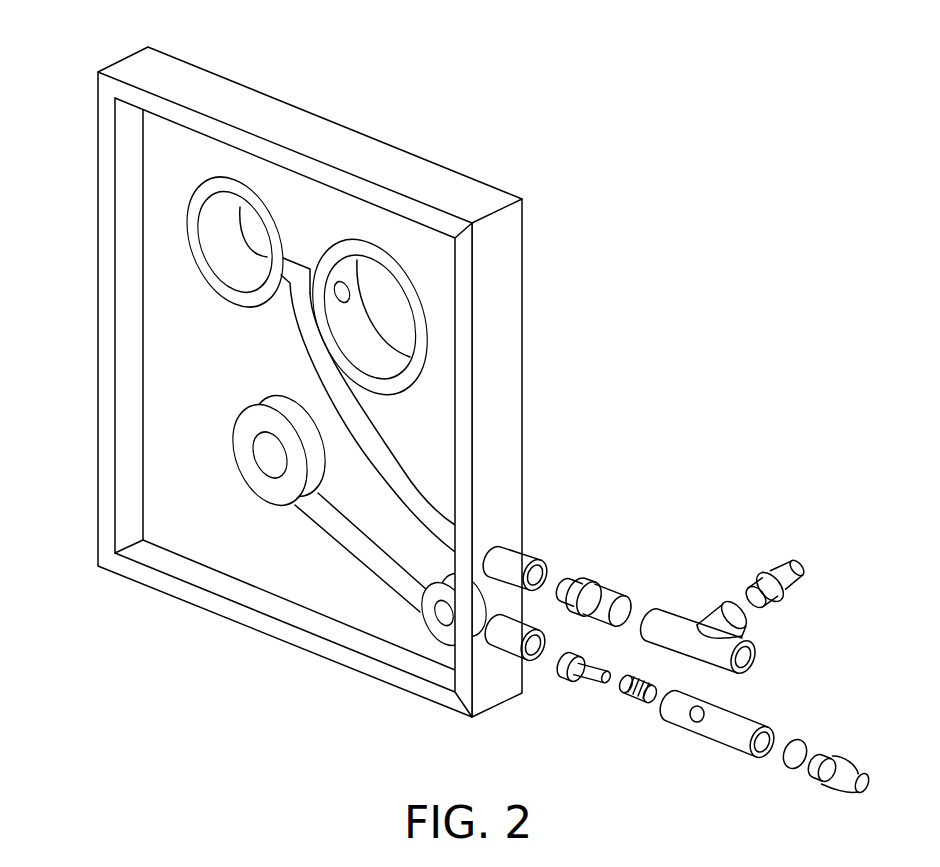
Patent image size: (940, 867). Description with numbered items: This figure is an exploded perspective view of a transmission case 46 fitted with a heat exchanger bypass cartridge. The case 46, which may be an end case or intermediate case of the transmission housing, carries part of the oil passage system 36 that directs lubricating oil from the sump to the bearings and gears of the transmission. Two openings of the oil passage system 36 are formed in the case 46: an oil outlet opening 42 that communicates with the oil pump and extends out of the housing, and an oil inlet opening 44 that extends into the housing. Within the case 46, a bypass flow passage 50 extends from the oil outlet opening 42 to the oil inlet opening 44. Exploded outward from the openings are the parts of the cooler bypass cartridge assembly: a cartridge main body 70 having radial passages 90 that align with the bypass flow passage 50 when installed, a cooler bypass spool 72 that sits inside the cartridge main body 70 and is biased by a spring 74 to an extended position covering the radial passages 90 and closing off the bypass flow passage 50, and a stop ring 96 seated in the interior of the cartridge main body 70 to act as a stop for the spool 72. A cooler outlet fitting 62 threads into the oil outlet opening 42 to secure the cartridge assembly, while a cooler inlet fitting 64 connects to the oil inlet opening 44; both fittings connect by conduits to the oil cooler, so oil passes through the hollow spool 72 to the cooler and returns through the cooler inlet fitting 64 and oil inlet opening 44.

The case 46 is at (329, 374).
The oil passage system 36 is at (431, 513).
The bypass flow passage 50 is at (437, 590).
The oil inlet opening 44 is at (520, 560).
The oil outlet opening 42 is at (510, 650).
The cooler inlet fitting 64 is at (595, 580).
The cooler bypass spool 72 is at (592, 682).
The spring 74 is at (640, 703).
The cartridge main body 70 is at (718, 731).
The radial passages 90 is at (705, 713).
The stop ring 96 is at (787, 767).
The cooler outlet fitting 62 is at (852, 768).